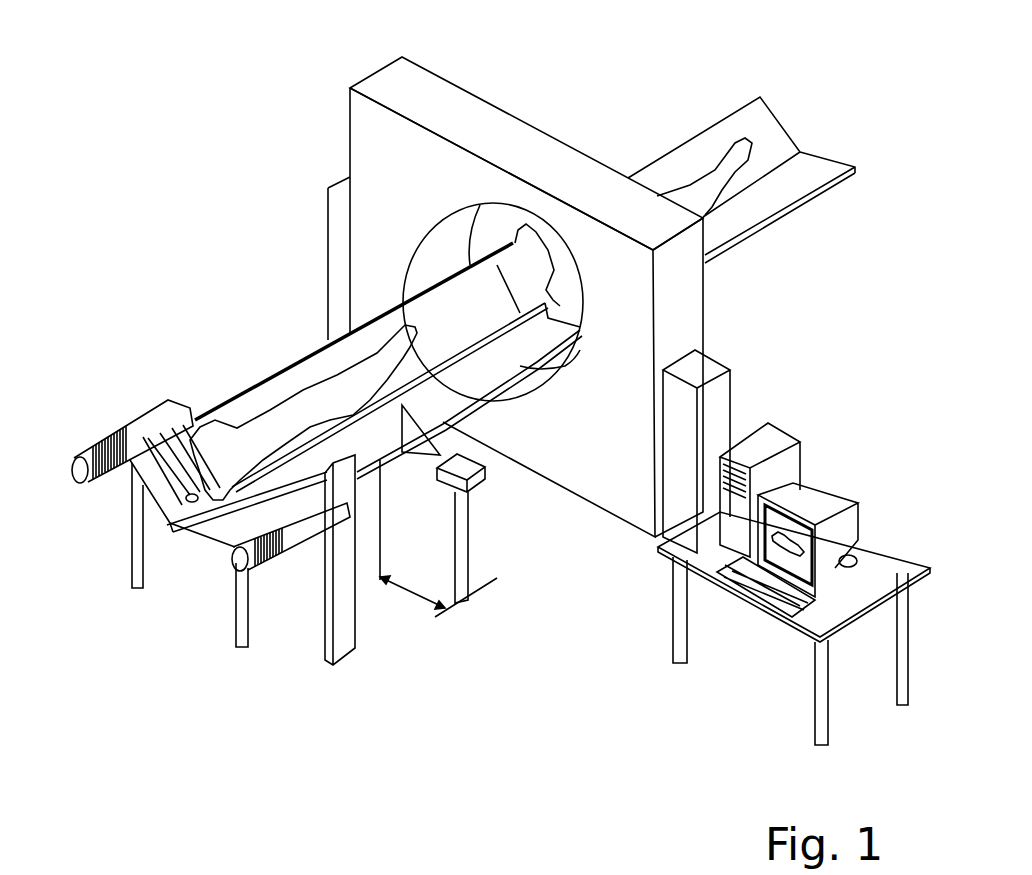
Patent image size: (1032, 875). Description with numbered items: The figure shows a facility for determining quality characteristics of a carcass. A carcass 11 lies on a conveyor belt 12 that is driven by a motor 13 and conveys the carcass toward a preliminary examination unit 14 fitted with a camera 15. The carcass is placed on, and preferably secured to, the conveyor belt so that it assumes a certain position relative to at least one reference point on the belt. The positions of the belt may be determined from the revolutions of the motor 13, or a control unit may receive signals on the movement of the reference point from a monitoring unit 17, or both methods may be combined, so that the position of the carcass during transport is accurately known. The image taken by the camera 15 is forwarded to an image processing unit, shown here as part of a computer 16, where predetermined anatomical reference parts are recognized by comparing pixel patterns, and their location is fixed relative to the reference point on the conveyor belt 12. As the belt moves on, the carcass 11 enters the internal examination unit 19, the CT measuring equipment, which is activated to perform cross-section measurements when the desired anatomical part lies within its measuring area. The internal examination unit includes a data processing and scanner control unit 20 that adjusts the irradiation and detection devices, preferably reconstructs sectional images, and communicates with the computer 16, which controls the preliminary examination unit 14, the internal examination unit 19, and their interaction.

The carcass 11 is at (288, 415).
The conveyor belt 12 is at (325, 363).
The motor 13 is at (97, 457).
The preliminary examination unit 14 is at (510, 590).
The camera 15 is at (480, 475).
The computer 16 is at (865, 546).
The monitoring unit 17 is at (345, 615).
The internal examination unit 19 is at (393, 147).
The data processing and scanner control unit 20 is at (705, 368).